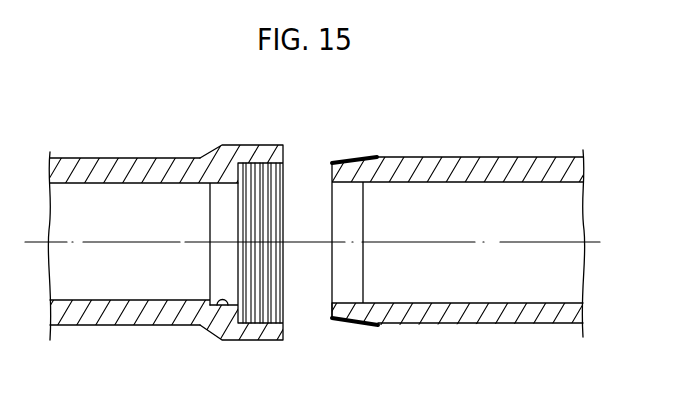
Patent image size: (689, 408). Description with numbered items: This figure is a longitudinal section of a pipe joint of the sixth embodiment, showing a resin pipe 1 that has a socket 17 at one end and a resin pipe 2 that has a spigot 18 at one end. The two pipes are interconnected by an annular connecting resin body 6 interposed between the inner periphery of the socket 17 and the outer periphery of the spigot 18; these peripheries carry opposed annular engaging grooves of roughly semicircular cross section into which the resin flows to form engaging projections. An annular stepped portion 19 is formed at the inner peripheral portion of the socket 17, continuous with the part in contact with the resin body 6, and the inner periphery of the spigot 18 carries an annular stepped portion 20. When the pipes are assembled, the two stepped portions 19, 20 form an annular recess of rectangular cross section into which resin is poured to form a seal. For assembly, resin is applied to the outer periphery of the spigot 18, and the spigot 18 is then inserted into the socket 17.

The resin pipe 1 is at (68, 306).
The resin pipe 2 is at (556, 313).
The annular connecting resin body 6 is at (353, 158).
The socket 17 is at (241, 146).
The spigot 18 is at (378, 325).
The annular stepped portion 19 is at (219, 306).
The annular stepped portion 20 is at (352, 292).